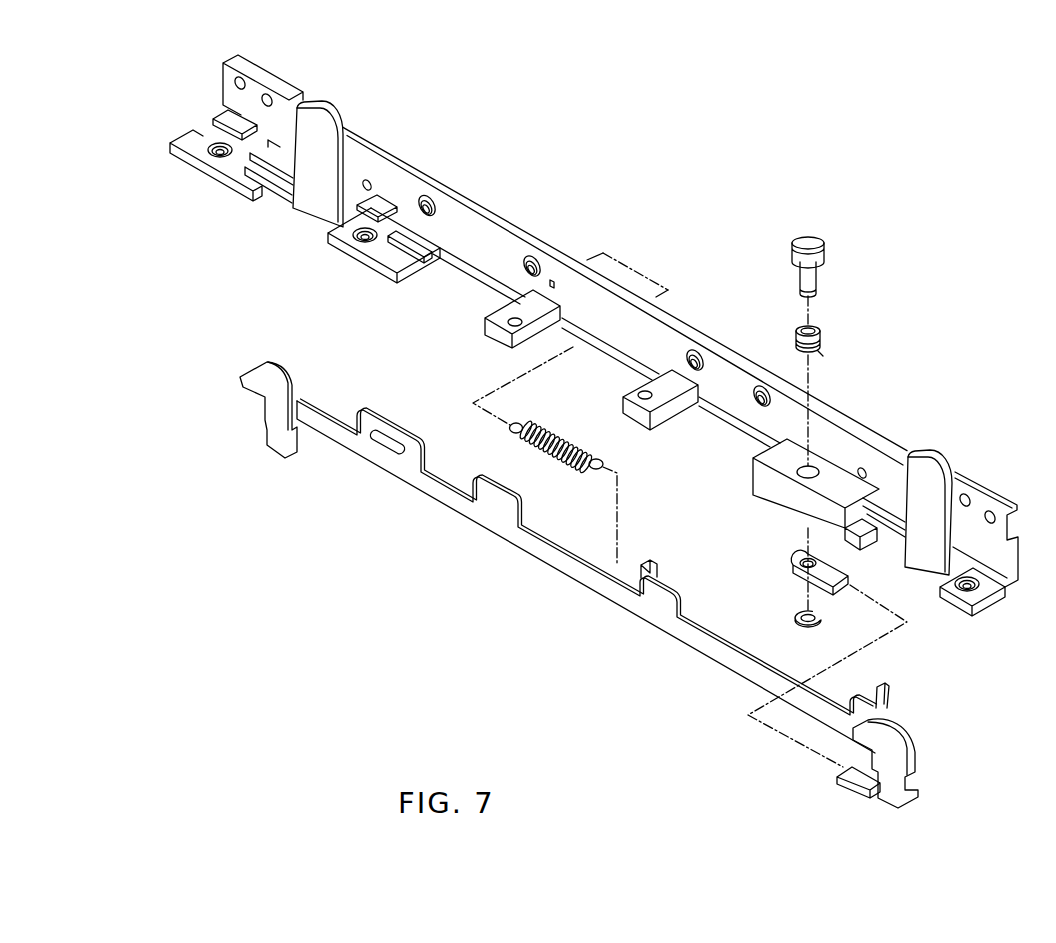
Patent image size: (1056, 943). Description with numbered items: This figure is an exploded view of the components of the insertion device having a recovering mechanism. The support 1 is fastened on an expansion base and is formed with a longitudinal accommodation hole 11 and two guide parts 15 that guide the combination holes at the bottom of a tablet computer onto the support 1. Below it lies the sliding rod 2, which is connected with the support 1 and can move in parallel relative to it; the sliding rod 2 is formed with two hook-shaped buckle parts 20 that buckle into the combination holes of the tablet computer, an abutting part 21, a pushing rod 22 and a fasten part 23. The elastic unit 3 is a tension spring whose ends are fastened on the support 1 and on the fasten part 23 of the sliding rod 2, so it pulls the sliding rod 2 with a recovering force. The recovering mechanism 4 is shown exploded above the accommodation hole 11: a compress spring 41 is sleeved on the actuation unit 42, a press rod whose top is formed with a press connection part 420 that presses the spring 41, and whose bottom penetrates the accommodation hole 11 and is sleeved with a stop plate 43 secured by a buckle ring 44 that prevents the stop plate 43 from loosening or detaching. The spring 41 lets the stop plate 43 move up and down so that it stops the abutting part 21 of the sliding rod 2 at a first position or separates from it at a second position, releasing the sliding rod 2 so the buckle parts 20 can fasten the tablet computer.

The support 1 is at (482, 238).
The sliding rod 2 is at (557, 557).
The elastic unit 3 is at (557, 435).
The recovering mechanism 4 is at (827, 470).
The accommodation hole 11 is at (813, 468).
The guide parts 15 is at (313, 193).
The buckle parts 20 is at (261, 373).
The abutting part 21 is at (862, 782).
The pushing rod 22 is at (884, 687).
The fasten part 23 is at (656, 568).
The spring 41 is at (822, 340).
The actuation unit 42 is at (812, 261).
The stop plate 43 is at (800, 559).
The buckle ring 44 is at (796, 616).
The press connection part 420 is at (818, 244).